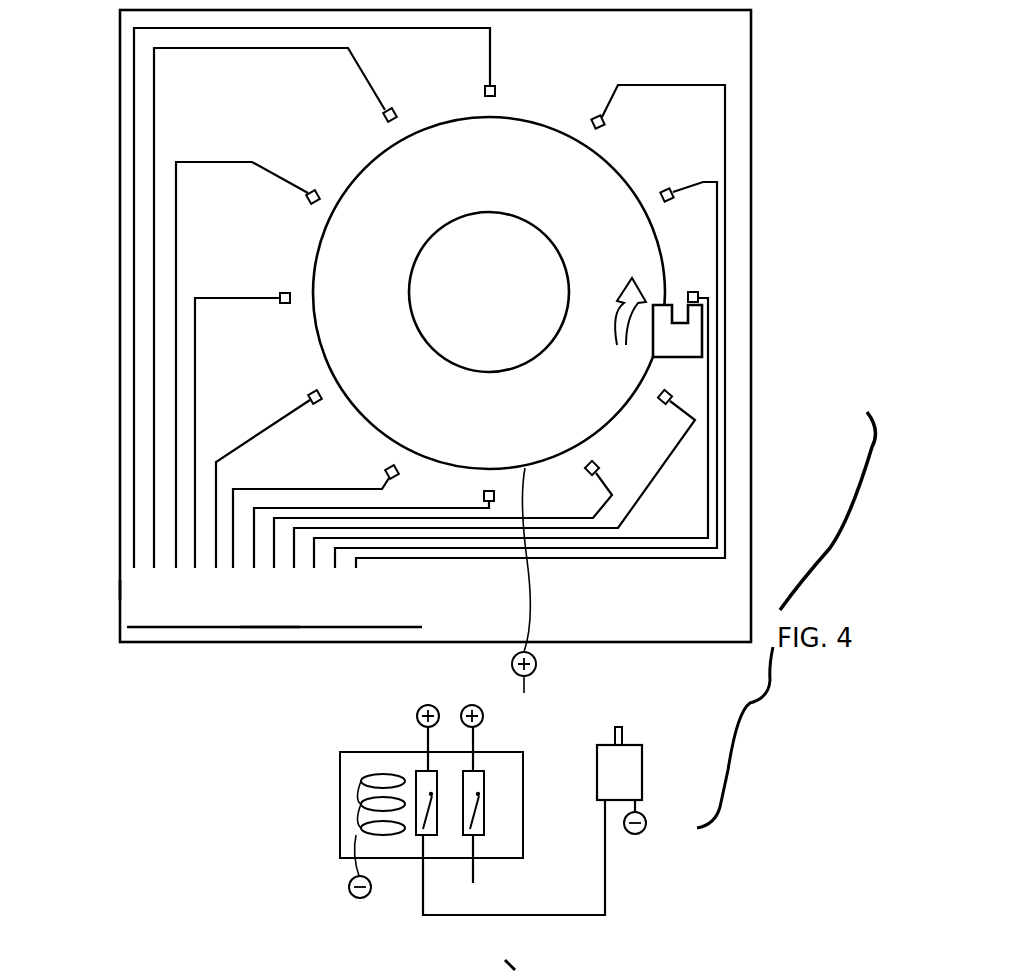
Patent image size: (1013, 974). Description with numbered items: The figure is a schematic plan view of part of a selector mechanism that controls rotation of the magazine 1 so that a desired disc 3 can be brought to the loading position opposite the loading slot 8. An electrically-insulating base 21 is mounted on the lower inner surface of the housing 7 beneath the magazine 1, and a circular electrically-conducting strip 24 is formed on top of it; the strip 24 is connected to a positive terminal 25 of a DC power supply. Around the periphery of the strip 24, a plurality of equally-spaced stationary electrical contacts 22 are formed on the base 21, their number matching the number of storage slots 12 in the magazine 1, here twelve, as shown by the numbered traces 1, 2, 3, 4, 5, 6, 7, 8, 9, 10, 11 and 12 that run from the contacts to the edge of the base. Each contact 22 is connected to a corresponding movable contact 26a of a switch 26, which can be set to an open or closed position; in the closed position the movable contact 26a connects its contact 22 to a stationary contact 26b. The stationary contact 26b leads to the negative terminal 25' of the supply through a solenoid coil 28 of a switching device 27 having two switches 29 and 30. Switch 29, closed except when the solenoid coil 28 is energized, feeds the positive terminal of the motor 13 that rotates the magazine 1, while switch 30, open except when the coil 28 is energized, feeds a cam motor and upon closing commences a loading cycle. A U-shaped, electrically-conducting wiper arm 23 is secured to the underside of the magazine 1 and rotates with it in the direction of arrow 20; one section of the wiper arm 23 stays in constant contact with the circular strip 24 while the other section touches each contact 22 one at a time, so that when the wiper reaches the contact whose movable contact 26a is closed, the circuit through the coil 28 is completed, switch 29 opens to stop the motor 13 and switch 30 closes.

The magazine 1 is at (136, 610).
The conductor trace 2 is at (154, 610).
The disc 3 is at (176, 610).
The conductor trace 4 is at (195, 610).
The conductor trace 5 is at (216, 610).
The conductor trace 6 is at (233, 610).
The housing 7 is at (254, 610).
The loading slot 8 is at (274, 610).
The conductor trace 9 is at (294, 610).
The conductor trace 10 is at (316, 620).
The conductor trace 11 is at (335, 610).
The storage slots 12 is at (356, 610).
The motor 13 is at (622, 780).
The arrow 20 is at (628, 346).
The electrically-insulating base 21 is at (731, 576).
The stationary electrical contacts 22 is at (608, 121).
The wiper arm 23 is at (700, 344).
The circular electrically-conducting strip 24 is at (569, 452).
The positive terminal 25 is at (479, 597).
The negative terminal 25' is at (497, 867).
The switch 26 is at (122, 637).
The movable contact 26a is at (120, 591).
The stationary contact 26b is at (266, 613).
The switching device 27 is at (357, 756).
The solenoid coil 28 is at (352, 786).
The switch 29 is at (428, 829).
The switch 30 is at (484, 827).